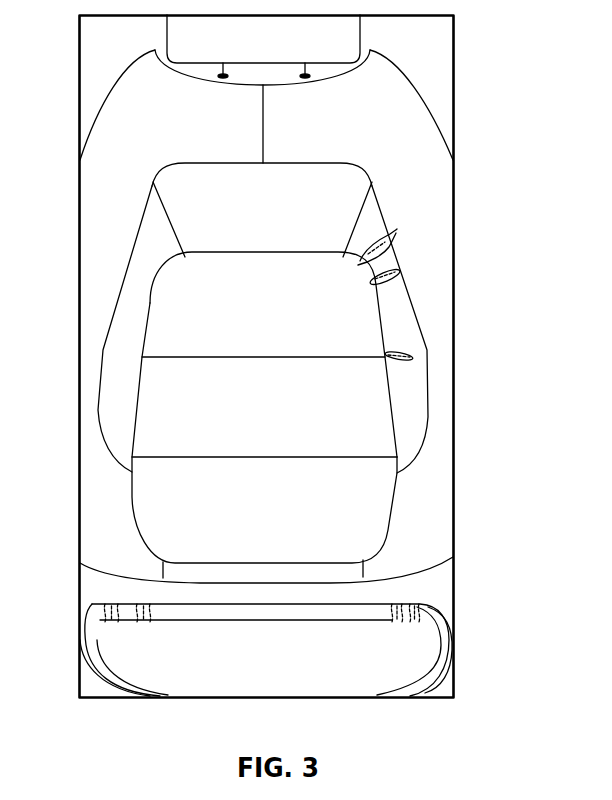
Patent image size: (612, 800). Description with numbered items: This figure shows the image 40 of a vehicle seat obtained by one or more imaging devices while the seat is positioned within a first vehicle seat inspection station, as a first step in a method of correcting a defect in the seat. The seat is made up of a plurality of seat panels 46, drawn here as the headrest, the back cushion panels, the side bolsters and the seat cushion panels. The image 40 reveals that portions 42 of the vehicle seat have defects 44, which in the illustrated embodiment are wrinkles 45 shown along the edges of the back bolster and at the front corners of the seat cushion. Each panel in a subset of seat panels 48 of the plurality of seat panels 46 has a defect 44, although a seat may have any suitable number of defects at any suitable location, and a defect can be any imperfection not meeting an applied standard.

The image 40 is at (466, 31).
The portions 42 is at (412, 390).
The defects 44 is at (399, 236).
The wrinkles 45 is at (385, 352).
The plurality of seat panels 46 is at (179, 128).
The subset of seat panels 48 is at (405, 322).